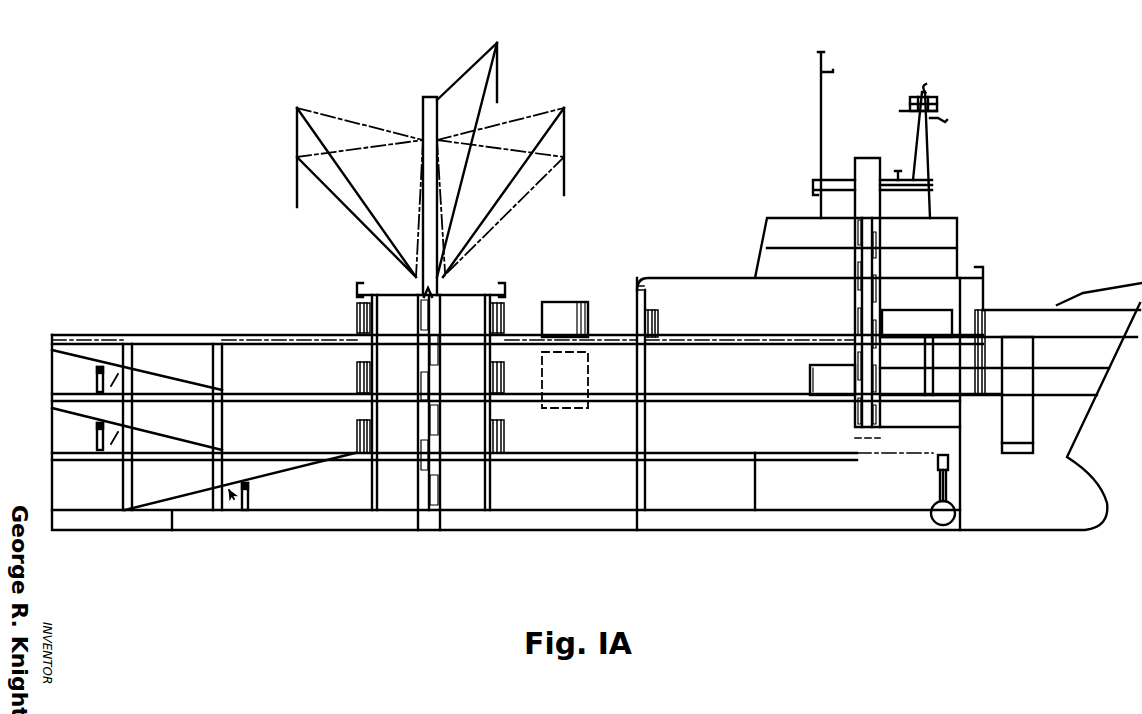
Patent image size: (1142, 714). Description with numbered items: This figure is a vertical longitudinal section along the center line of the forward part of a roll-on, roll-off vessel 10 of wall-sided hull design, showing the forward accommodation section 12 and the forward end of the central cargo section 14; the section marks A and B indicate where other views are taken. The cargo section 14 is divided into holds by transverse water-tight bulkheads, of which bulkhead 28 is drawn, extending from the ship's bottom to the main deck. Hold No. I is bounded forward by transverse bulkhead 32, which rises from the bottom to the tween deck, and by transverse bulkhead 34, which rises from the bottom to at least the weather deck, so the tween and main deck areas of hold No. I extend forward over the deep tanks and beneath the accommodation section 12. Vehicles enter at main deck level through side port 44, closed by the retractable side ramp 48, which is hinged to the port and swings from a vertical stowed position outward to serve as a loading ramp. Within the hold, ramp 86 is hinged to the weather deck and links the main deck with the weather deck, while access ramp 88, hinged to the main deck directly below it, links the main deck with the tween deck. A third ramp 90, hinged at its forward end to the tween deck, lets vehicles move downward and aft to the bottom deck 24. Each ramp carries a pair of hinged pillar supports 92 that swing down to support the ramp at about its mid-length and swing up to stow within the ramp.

The roll-on, roll-off vessel 10 is at (191, 290).
The forward accommodation section 12 is at (960, 227).
The central cargo section 14 is at (298, 334).
The bottom deck 24 is at (68, 508).
The transverse water-tight bulkhead 28 is at (418, 498).
The transverse bulkhead 32 is at (635, 482).
The transverse bulkhead 34 is at (857, 442).
The side port 44 is at (548, 360).
The retractable side ramp 48 is at (560, 302).
The ramp 86 is at (73, 348).
The access ramp 88 is at (143, 428).
The third ramp 90 is at (307, 468).
The hinged pillar supports 92 is at (97, 378).
The section A is at (613, 326).
The section B is at (105, 328).